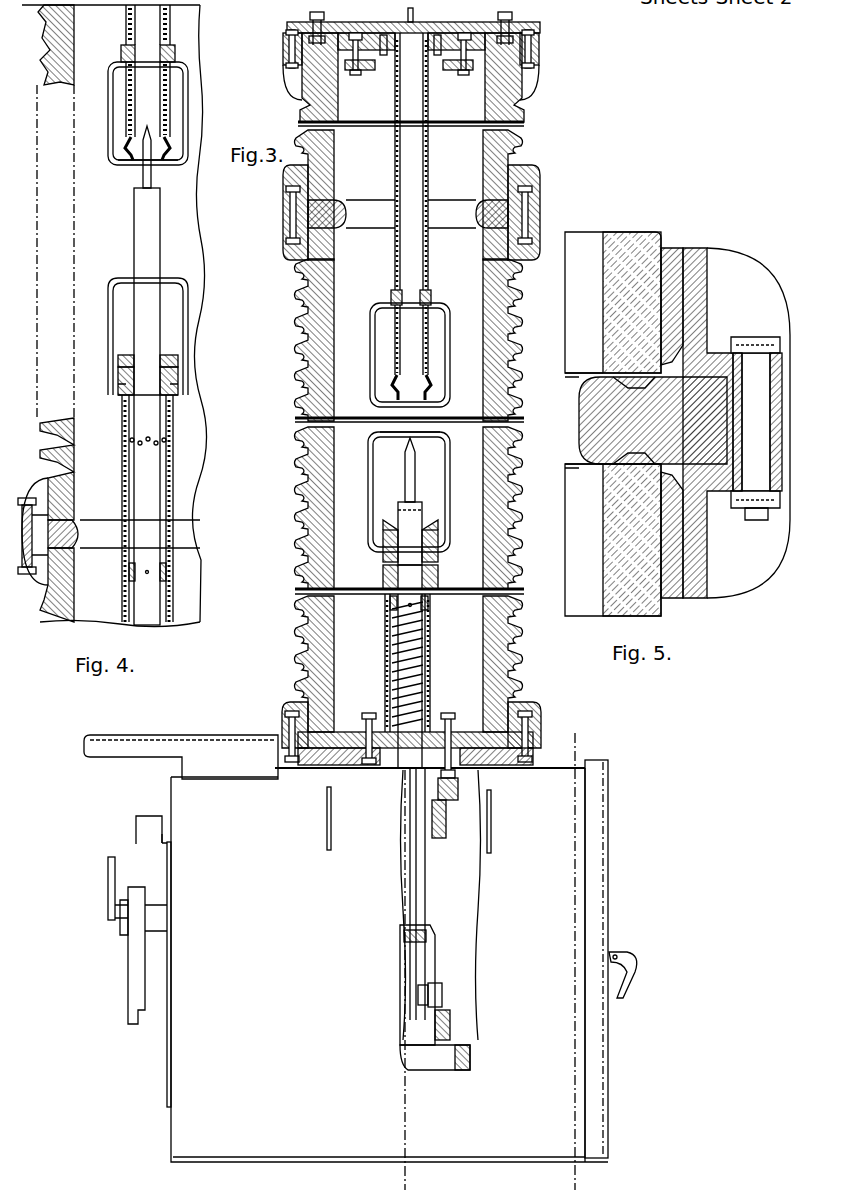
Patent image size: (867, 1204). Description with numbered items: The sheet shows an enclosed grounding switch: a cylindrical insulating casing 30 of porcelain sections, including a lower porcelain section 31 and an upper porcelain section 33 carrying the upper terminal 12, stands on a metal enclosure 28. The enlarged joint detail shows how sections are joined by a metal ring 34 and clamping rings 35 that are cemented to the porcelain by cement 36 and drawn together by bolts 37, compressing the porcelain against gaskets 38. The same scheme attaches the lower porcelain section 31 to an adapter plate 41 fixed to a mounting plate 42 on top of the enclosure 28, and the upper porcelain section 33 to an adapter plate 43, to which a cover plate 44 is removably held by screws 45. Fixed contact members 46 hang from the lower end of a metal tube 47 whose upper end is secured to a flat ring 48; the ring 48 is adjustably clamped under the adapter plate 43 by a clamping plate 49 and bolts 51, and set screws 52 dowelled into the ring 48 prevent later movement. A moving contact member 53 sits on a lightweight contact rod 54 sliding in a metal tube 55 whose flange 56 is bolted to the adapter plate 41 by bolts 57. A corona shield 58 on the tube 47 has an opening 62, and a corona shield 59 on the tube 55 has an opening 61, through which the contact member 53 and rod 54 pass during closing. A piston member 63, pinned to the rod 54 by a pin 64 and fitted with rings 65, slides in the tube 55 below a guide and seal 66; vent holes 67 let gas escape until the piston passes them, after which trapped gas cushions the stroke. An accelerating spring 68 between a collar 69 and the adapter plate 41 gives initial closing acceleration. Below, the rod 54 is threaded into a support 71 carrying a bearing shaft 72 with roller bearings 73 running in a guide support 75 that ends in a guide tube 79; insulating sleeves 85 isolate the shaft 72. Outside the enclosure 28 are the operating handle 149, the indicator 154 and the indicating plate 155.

In FIG. 3, the upper terminal 12 is at (411, 24).
In FIG. 3, the metal enclosure 28 is at (180, 1069).
In FIG. 4, the insulating casing 30 is at (34, 146).
In FIG. 3, the insulating casing 30 is at (282, 296).
In FIG. 5, the insulating casing 30 is at (625, 242).
In FIG. 3, the lower porcelain section 31 is at (296, 652).
In FIG. 3, the upper porcelain section 33 is at (522, 110).
In FIG. 3, the metal ring 34 is at (480, 206).
In FIG. 5, the metal ring 34 is at (575, 463).
In FIG. 3, the clamping rings 35 is at (540, 86).
In FIG. 5, the clamping rings 35 is at (708, 250).
In FIG. 5, the cement 36 is at (672, 250).
In FIG. 3, the bolts 37 is at (530, 206).
In FIG. 5, the bolts 37 is at (759, 342).
In FIG. 5, the gaskets 38 is at (600, 381).
In FIG. 3, the adapter plate 41 is at (530, 741).
In FIG. 3, the mounting plate 42 is at (510, 769).
In FIG. 3, the adapter plate 43 is at (526, 48).
In FIG. 3, the cover plate 44 is at (512, 19).
In FIG. 3, the screws 45 is at (312, 19).
In FIG. 4, the fixed contact members 46 is at (165, 108).
In FIG. 3, the fixed contact members 46 is at (428, 370).
In FIG. 3, the metal tube 47 is at (395, 172).
In FIG. 3, the flat ring 48 is at (448, 70).
In FIG. 3, the clamping plate 49 is at (308, 63).
In FIG. 3, the bolts 51 is at (355, 75).
In FIG. 3, the set screws 52 is at (383, 70).
In FIG. 4, the moving contact member 53 is at (156, 176).
In FIG. 3, the moving contact member 53 is at (414, 492).
In FIG. 4, the contact rod 54 is at (145, 232).
In FIG. 3, the contact rod 54 is at (398, 510).
In FIG. 4, the metal tube 55 is at (122, 490).
In FIG. 3, the metal tube 55 is at (385, 656).
In FIG. 3, the flange 56 is at (455, 741).
In FIG. 3, the bolts 57 is at (448, 714).
In FIG. 4, the corona shield 58 is at (108, 94).
In FIG. 3, the corona shield 58 is at (370, 377).
In FIG. 4, the corona shield 59 is at (110, 316).
In FIG. 3, the corona shield 59 is at (370, 484).
In FIG. 3, the opening 61 is at (385, 432).
In FIG. 4, the opening 62 is at (134, 164).
In FIG. 4, the piston member 63 is at (147, 384).
In FIG. 3, the piston member 63 is at (438, 579).
In FIG. 4, the pin 64 is at (128, 372).
In FIG. 3, the pin 64 is at (412, 578).
In FIG. 4, the rings 65 is at (120, 393).
In FIG. 3, the rings 65 is at (383, 577).
In FIG. 4, the guide and seal 66 is at (133, 358).
In FIG. 3, the guide and seal 66 is at (432, 524).
In FIG. 4, the vent holes 67 is at (125, 442).
In FIG. 3, the accelerating spring 68 is at (395, 633).
In FIG. 4, the collar 69 is at (128, 574).
In FIG. 3, the collar 69 is at (390, 604).
In FIG. 3, the support 71 is at (425, 936).
In FIG. 3, the bearing shaft 72 is at (446, 996).
In FIG. 3, the roller bearings 73 is at (438, 989).
In FIG. 3, the guide support 75 is at (428, 874).
In FIG. 3, the guide tube 79 is at (470, 1058).
In FIG. 3, the insulating sleeves 85 is at (432, 986).
In FIG. 3, the operating handle 149 is at (128, 951).
In FIG. 3, the indicator 154 is at (108, 882).
In FIG. 3, the indicating plate 155 is at (136, 830).